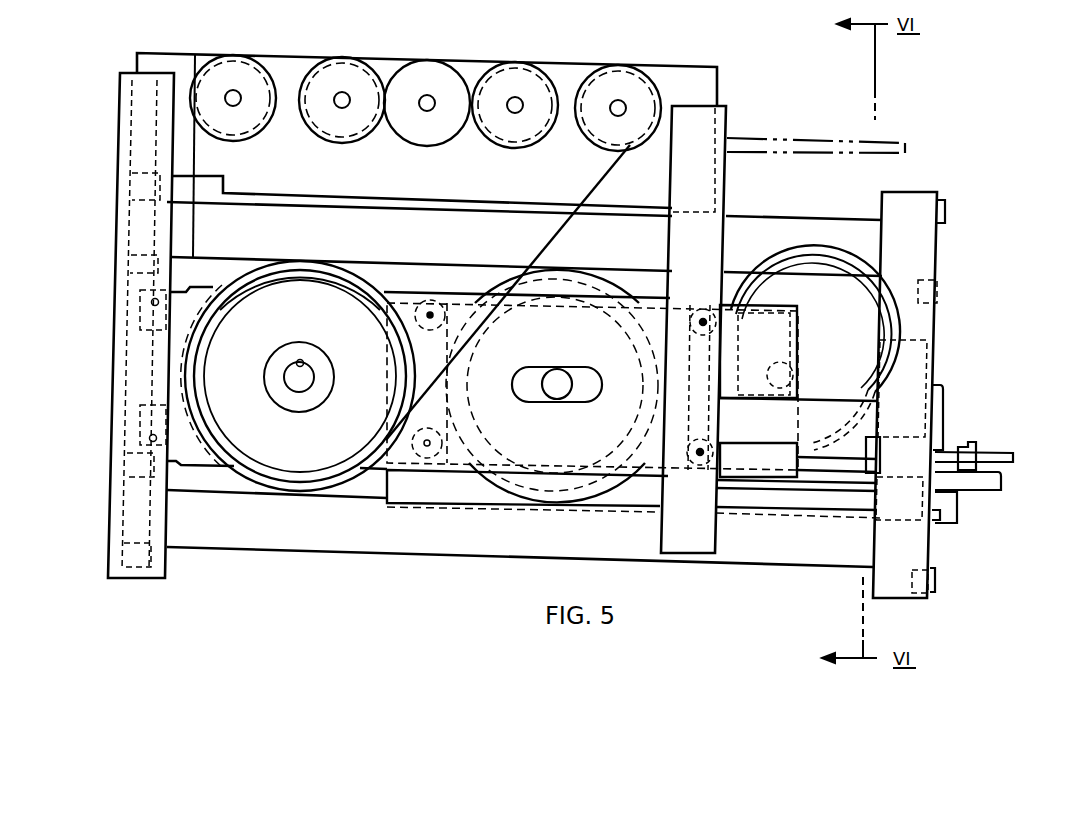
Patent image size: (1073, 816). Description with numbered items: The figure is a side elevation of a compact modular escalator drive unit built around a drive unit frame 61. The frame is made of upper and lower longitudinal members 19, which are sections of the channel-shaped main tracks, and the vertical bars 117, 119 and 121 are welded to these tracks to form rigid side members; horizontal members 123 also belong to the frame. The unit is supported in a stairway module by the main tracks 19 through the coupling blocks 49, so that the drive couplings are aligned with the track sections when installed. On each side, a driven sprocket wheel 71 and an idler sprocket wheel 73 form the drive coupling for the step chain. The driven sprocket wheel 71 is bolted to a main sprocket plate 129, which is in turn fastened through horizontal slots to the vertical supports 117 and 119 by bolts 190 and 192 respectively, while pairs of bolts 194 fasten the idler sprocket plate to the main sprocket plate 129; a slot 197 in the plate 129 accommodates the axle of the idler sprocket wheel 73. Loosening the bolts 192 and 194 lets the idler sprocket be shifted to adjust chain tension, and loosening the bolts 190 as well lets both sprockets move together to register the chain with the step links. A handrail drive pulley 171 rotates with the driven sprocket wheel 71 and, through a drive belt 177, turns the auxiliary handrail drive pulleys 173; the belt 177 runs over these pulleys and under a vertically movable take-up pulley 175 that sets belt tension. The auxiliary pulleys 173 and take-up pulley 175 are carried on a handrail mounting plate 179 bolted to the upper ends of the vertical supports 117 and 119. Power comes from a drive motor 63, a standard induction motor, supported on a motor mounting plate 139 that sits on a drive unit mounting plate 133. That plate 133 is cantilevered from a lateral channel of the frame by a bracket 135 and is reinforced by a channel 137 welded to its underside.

The longitudinal members 19 is at (805, 218).
The coupling blocks 49 is at (125, 183).
The drive unit frame 61 is at (753, 117).
The drive motor 63 is at (857, 322).
The driven sprocket wheels 71 is at (365, 287).
The idler sprocket wheels 73 is at (630, 249).
The vertical bar 117 is at (110, 508).
The vertical bar 119 is at (661, 533).
The vertical bar 121 is at (897, 600).
The horizontal members 123 is at (820, 398).
The main sprocket plates 129 is at (425, 297).
The drive unit mounting plate 133 is at (1000, 485).
The bracket 135 is at (944, 416).
The channel 137 is at (958, 503).
The motor mounting plate 139 is at (878, 437).
The handrail drive pulley 171 is at (228, 287).
The auxiliary handrail drive pulleys 173 is at (252, 140).
The take-up pulley 175 is at (437, 147).
The drive belt 177 is at (197, 155).
The handrail mounting plate 179 is at (680, 66).
The bolts 190 is at (152, 302).
The bolts 192 is at (703, 322).
The bolts 194 is at (430, 315).
The slot 197 is at (583, 403).